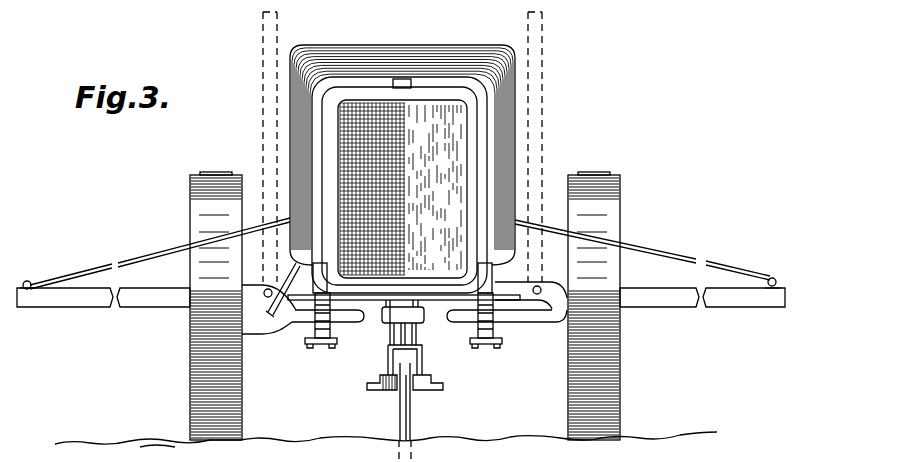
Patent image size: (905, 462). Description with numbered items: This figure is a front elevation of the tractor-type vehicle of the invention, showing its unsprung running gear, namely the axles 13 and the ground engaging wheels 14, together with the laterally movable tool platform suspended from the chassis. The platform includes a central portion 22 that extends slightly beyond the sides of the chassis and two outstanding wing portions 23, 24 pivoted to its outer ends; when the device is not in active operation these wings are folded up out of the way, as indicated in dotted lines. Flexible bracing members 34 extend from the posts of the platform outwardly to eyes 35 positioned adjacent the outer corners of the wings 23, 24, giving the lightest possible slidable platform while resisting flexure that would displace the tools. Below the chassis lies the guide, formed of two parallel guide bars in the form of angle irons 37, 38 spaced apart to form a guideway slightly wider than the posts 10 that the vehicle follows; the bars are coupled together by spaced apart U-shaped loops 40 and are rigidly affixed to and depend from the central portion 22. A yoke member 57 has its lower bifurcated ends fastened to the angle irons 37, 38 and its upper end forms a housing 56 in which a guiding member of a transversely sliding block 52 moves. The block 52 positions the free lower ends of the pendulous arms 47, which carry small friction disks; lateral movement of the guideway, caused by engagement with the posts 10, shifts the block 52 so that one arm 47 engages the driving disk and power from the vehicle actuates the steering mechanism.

The posts 10 is at (413, 412).
The axles 13 is at (297, 322).
The ground engaging wheels 14 is at (197, 192).
The central portion 22 is at (508, 285).
The wing portion 23 is at (160, 303).
The wing portion 24 is at (690, 300).
The flexible bracing members 34 is at (147, 244).
The eyes 35 is at (30, 282).
The angle iron 37 is at (378, 378).
The angle iron 38 is at (433, 379).
The U-shaped loops 40 is at (422, 355).
The pendulous arms 47 is at (378, 297).
The transversely sliding block 52 is at (385, 318).
The housing 56 is at (389, 325).
The yoke member 57 is at (405, 335).